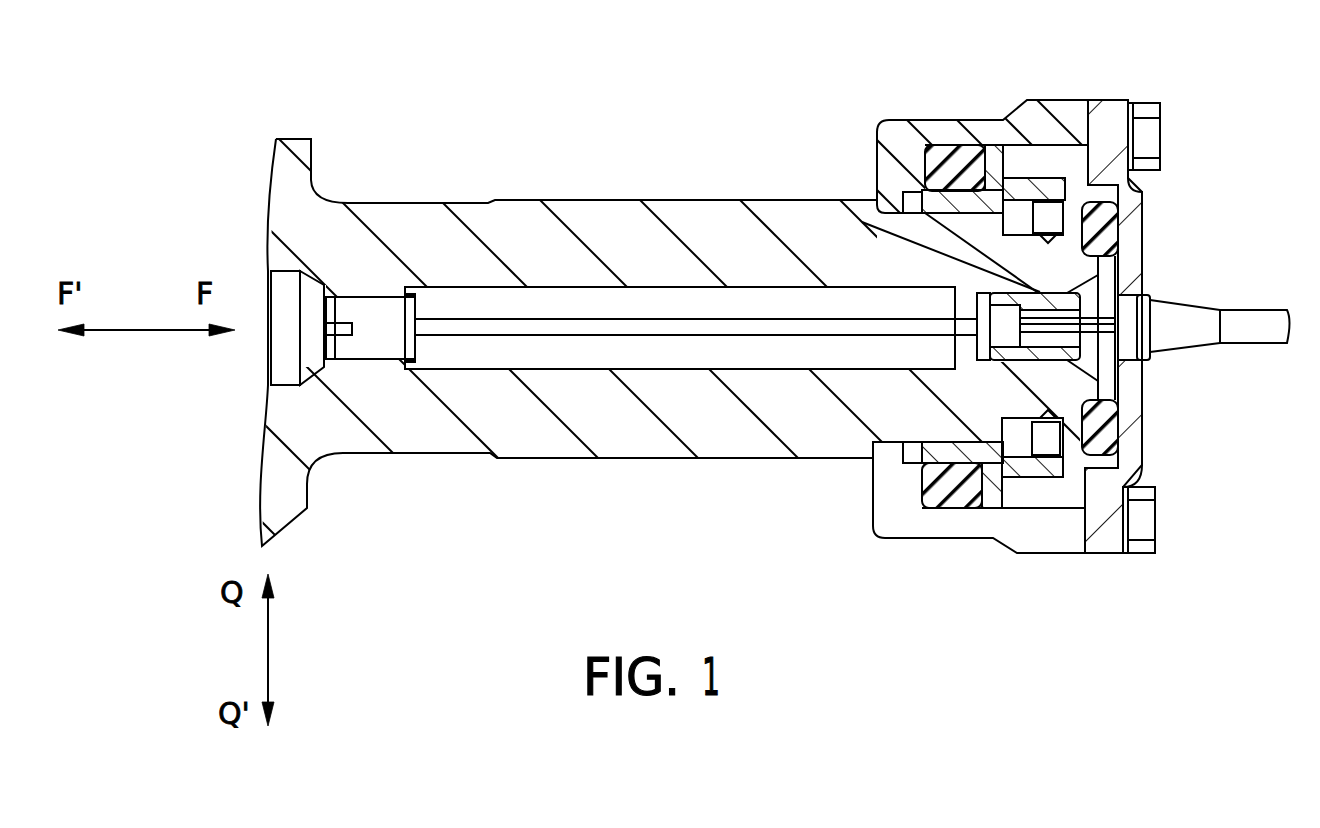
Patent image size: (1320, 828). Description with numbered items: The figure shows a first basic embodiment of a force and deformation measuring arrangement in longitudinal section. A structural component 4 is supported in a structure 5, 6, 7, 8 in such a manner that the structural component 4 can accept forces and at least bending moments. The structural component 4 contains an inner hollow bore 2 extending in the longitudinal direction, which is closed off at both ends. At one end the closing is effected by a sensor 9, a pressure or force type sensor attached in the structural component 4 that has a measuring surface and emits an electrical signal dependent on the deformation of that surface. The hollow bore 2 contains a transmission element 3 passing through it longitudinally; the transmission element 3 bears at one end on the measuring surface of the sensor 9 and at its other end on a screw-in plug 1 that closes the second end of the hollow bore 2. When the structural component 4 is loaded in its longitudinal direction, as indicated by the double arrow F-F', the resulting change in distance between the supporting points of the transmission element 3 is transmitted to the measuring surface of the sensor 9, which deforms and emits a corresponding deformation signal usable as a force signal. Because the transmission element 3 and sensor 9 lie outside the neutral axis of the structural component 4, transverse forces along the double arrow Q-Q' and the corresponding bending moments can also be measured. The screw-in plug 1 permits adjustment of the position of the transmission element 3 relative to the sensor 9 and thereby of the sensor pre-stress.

The screw-in plug 1 is at (372, 303).
The hollow bore 2 is at (493, 297).
The transmission element 3 is at (620, 325).
The structural component 4 is at (740, 215).
The structure 5 is at (898, 147).
The structure 6 is at (957, 148).
The structure 7 is at (1125, 208).
The structure 8 is at (1140, 237).
The sensor 9 is at (1040, 365).